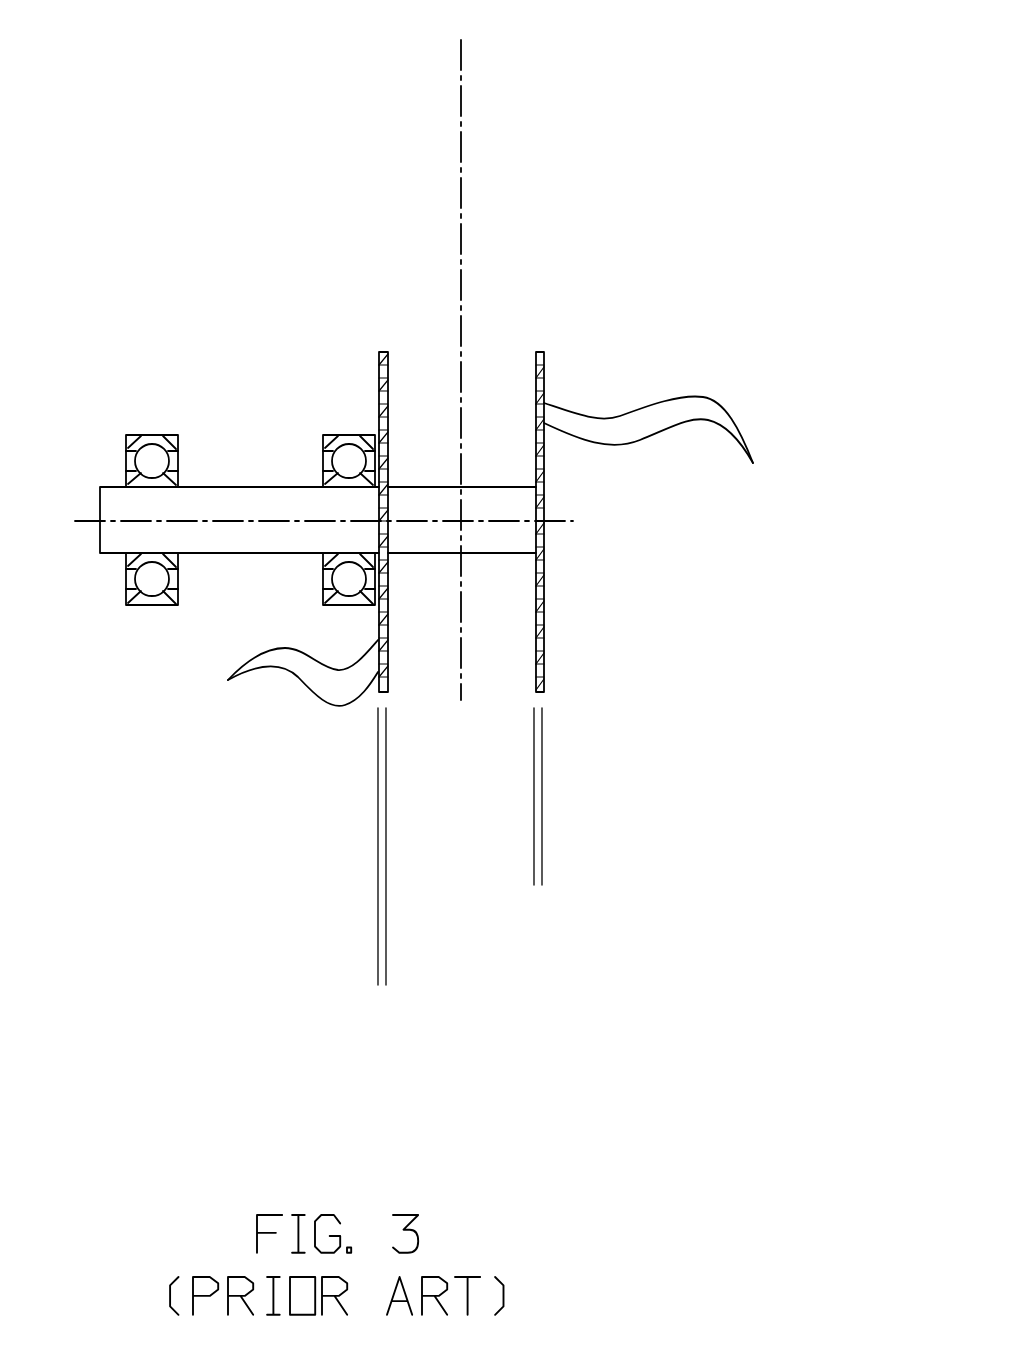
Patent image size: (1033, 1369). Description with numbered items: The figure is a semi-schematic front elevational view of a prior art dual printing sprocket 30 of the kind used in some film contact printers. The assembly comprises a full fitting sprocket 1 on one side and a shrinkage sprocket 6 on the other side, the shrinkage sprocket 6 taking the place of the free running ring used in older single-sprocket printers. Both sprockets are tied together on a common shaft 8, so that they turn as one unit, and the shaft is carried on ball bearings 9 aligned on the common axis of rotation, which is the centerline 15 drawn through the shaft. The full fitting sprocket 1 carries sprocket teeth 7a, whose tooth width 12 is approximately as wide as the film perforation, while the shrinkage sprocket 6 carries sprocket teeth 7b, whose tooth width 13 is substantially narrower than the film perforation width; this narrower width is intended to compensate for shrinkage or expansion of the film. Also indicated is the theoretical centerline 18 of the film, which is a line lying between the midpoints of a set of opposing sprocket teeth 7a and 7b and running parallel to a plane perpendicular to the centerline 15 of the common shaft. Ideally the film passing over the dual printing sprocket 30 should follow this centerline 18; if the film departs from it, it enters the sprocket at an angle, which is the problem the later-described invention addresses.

The full fitting sprocket 1 is at (388, 352).
The shrinkage sprocket 6 is at (540, 352).
The sprocket teeth 7a is at (264, 675).
The sprocket teeth 7b is at (683, 445).
The common shaft 8 is at (427, 557).
The ball bearings 9 is at (353, 435).
The tooth width 12 is at (277, 937).
The tooth width 13 is at (433, 837).
The centerline 15 is at (630, 677).
The centerline 18 is at (610, 23).
The dual printing sprocket 30 is at (600, 360).